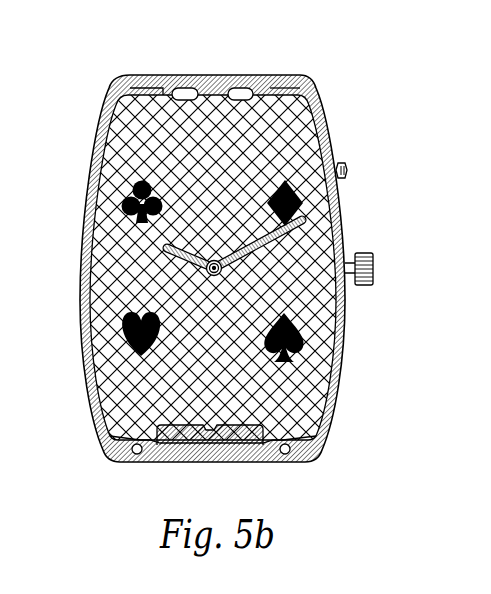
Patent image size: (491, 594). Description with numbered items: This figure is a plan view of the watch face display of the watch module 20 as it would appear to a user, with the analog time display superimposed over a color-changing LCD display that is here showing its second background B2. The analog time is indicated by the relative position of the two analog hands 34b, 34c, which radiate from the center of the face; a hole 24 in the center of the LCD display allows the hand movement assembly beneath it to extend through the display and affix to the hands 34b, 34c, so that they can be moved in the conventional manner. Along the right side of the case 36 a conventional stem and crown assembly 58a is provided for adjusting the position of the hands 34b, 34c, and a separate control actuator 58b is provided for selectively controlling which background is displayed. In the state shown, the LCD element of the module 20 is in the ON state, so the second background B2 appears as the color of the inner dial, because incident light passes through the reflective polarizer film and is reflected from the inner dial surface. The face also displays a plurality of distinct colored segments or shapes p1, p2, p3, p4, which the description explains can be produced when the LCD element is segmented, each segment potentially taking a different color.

The watch module 20 is at (123, 66).
The second background B2 is at (270, 147).
The control actuator 58b is at (347, 163).
The analog hand 34c is at (305, 221).
The analog hand 34b is at (166, 248).
The hole 24 is at (222, 272).
The stem and crown assembly 58a is at (375, 266).
The case bezel 36 is at (330, 378).
The colored segment p1 is at (153, 178).
The colored segment p2 is at (268, 185).
The colored segment p3 is at (166, 318).
The colored segment p4 is at (265, 358).